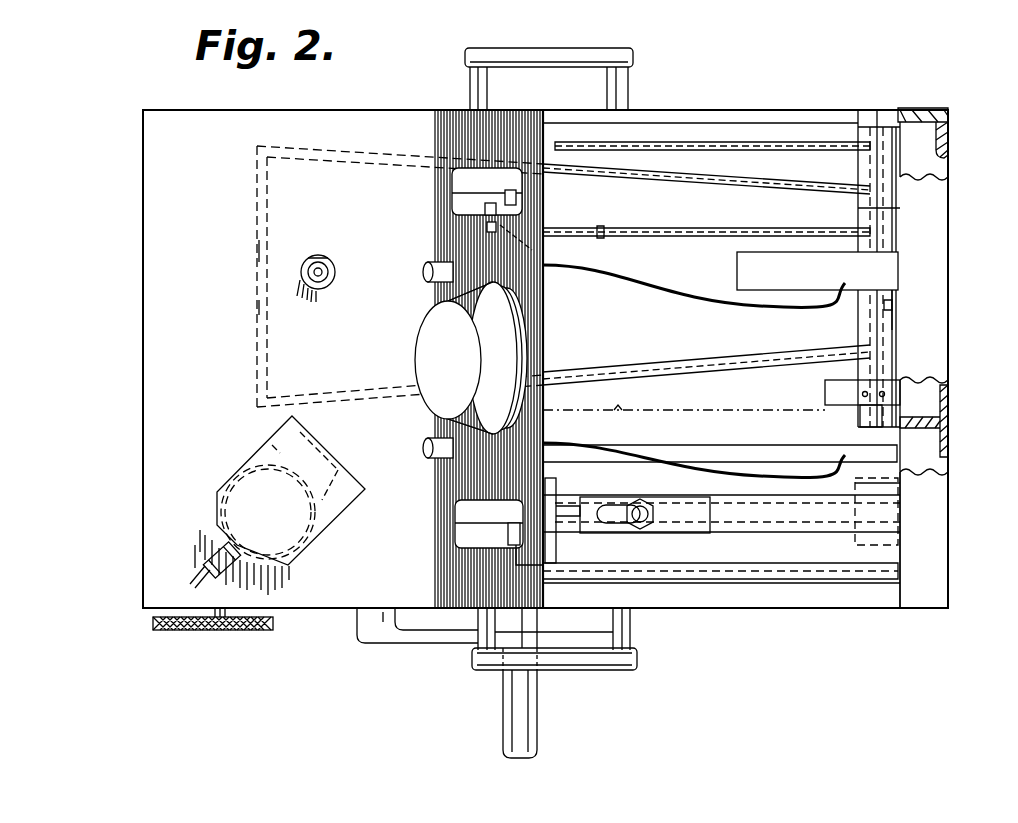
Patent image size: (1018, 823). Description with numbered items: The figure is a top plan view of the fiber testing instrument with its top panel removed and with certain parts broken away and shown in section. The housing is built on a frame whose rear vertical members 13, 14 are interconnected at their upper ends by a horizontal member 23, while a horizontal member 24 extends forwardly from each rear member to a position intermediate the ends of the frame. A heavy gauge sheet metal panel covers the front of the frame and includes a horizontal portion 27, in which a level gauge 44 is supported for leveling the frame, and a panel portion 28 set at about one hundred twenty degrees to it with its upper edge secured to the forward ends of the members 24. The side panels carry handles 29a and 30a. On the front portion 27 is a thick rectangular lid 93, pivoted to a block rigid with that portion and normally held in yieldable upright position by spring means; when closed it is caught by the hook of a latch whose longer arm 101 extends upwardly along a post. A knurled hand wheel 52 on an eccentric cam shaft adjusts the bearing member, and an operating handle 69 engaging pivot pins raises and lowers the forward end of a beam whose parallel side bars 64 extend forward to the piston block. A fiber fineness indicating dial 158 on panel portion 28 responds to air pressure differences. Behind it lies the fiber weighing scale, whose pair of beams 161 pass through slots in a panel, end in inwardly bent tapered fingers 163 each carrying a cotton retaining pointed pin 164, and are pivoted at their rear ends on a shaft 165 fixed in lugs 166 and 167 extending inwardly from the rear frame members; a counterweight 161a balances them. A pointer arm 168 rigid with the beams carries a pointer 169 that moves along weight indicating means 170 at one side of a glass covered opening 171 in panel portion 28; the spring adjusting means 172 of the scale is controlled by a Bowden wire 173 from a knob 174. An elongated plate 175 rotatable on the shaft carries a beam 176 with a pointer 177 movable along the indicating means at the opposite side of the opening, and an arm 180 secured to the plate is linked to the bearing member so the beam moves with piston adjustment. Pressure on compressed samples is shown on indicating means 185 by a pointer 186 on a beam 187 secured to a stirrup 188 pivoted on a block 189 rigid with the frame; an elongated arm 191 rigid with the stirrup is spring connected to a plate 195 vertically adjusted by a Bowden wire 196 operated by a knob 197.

The vertical member 13 is at (950, 412).
The vertical member 14 is at (948, 115).
The horizontal member 23 is at (945, 532).
The horizontal member 24 is at (685, 120).
The horizontal portion 27 is at (171, 359).
The panel portion 28 is at (458, 575).
The handle 29a is at (636, 58).
The handle 30a is at (640, 663).
The level gauge 44 is at (326, 268).
The knurled hand wheel 52 is at (153, 622).
The side bars 64 is at (746, 456).
The operating handle 69 is at (386, 644).
The lid 93 is at (250, 464).
The longer arm 101 is at (204, 562).
The fiber fineness indicating dial 158 is at (430, 338).
The scale beams 161 is at (668, 180).
The counterweight 161a is at (893, 312).
The fingers 163 is at (262, 206).
The cotton retaining pointed pin 164 is at (258, 302).
The shaft 165 is at (890, 125).
The lug 166 is at (866, 125).
The lug 167 is at (862, 432).
The pointer arm 168 is at (765, 142).
The pointer 169 is at (522, 190).
The weight indicating means 170 is at (460, 186).
The glass covered opening 171 is at (526, 208).
The spring adjusting means 172 is at (817, 271).
The Bowden wire 173 is at (676, 276).
The knob 174 is at (428, 272).
The elongated plate 175 is at (886, 335).
The beam 176 is at (672, 236).
The pointer 177 is at (526, 242).
The arm 180 is at (790, 403).
The indicating means 185 is at (468, 540).
The pointer 186 is at (524, 548).
The beam 187 is at (724, 574).
The stirrup 188 is at (858, 550).
The block 189 is at (880, 486).
The elongated arm 191 is at (560, 508).
The plate 195 is at (682, 506).
The Bowden wire 196 is at (700, 458).
The knob 197 is at (426, 458).